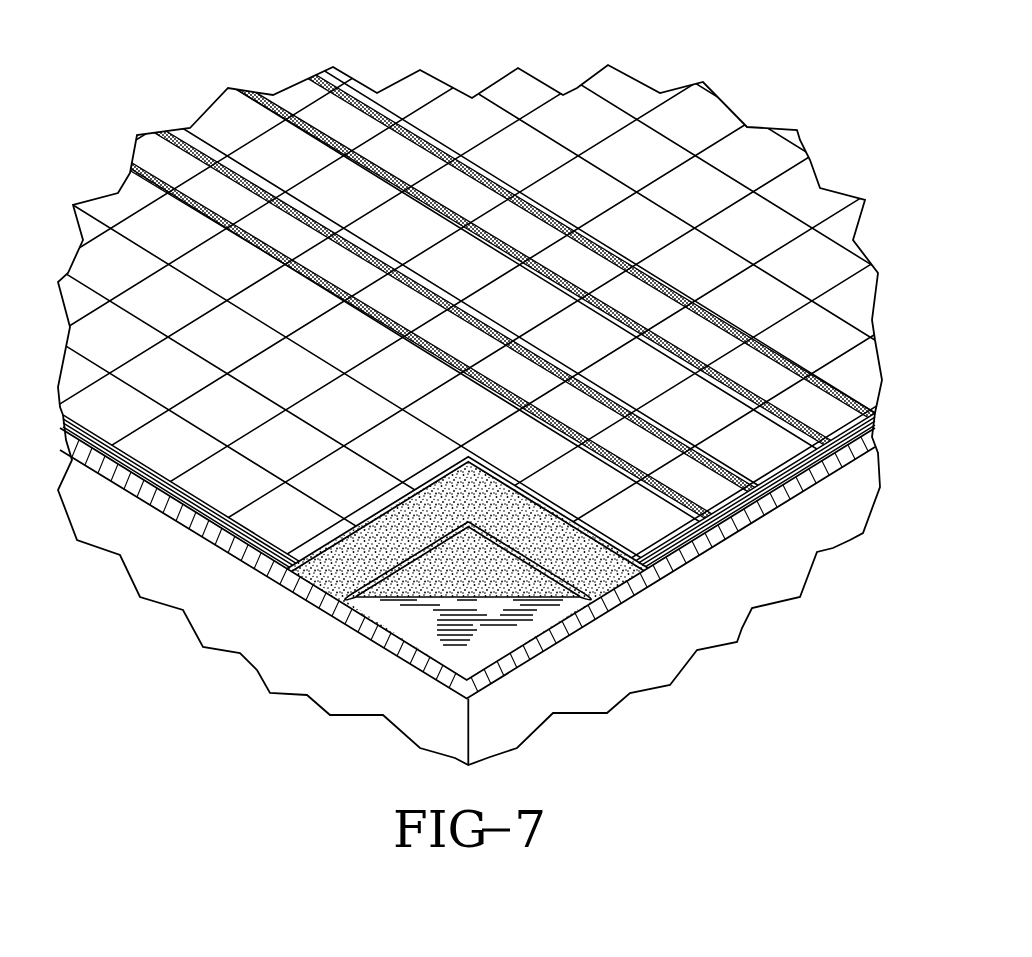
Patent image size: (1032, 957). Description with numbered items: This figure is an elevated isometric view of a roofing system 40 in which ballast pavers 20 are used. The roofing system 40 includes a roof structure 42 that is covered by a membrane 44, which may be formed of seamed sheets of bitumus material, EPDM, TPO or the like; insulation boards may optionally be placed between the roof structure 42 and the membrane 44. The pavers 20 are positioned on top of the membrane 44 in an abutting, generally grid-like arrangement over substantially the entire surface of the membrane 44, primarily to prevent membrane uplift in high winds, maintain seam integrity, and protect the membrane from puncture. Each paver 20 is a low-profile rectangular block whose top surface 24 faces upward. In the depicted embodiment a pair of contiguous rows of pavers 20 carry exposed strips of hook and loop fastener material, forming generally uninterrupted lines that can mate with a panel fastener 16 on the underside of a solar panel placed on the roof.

The panel fastener 16 is at (200, 205).
The ballast paver 20 is at (150, 140).
The top surface 24 is at (695, 112).
The roofing system 40 is at (670, 580).
The roof structure 42 is at (490, 645).
The membrane 44 is at (340, 558).